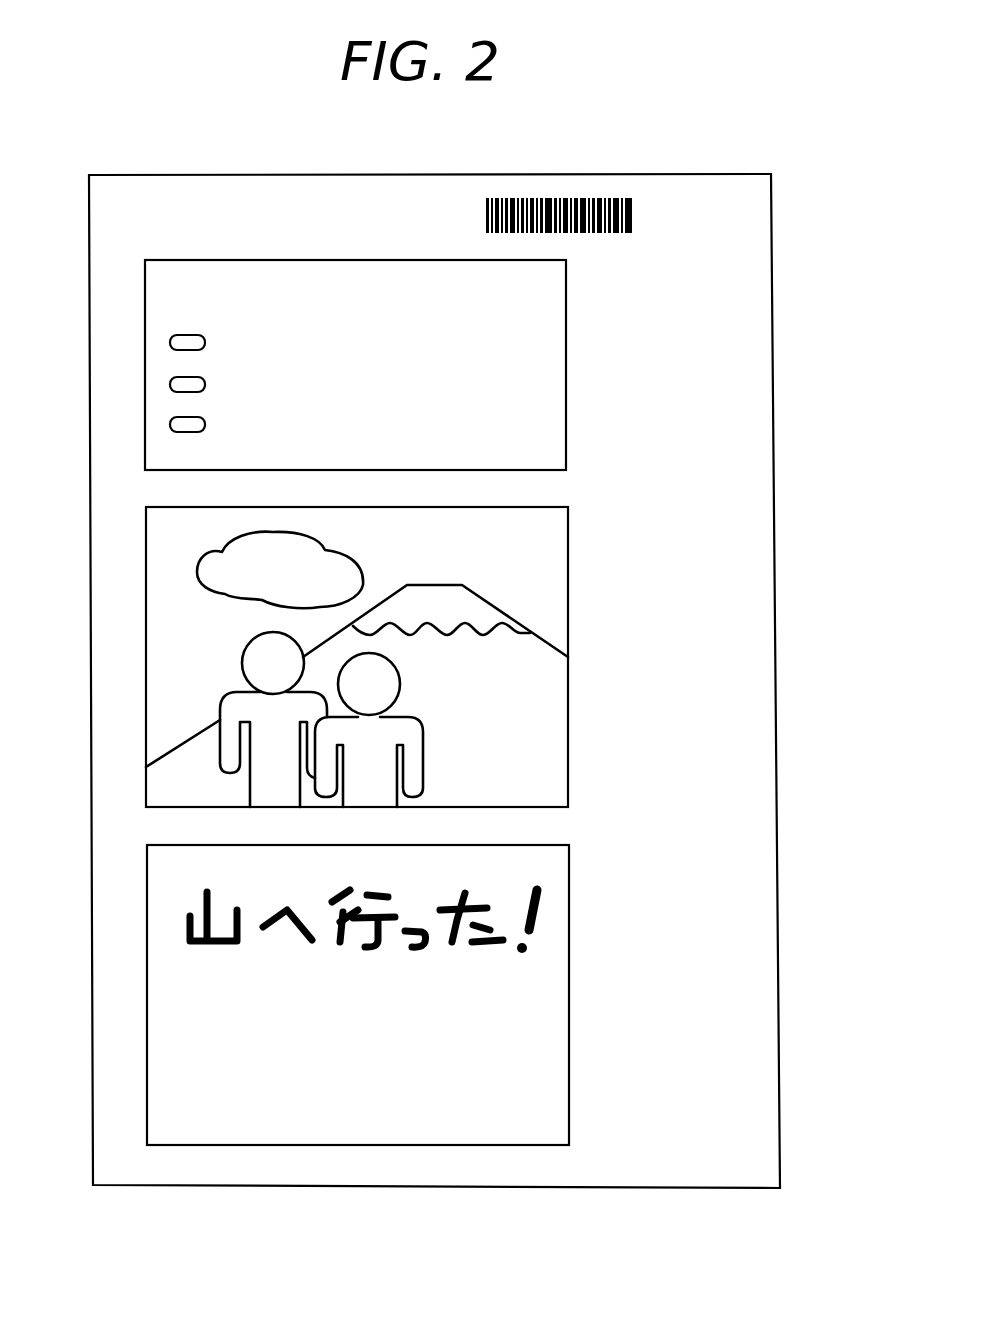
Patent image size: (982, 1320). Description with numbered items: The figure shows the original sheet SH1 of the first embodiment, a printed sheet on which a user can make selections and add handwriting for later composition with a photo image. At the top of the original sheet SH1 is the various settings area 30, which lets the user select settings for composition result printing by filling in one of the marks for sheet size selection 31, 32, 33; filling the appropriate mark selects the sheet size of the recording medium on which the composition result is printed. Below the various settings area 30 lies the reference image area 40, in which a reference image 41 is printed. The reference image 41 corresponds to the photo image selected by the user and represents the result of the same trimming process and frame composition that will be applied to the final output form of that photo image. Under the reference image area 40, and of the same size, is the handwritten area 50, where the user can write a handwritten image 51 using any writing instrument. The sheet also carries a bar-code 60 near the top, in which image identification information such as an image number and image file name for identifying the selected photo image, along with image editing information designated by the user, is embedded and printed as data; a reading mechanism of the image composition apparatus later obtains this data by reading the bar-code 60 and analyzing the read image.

The original sheet SH1 is at (130, 175).
The barcode 60 is at (632, 211).
The various settings area 30 is at (438, 365).
The mark for sheet size selection 31 is at (170, 342).
The mark for sheet size selection 32 is at (170, 383).
The mark for sheet size selection 33 is at (170, 424).
The reference image area 40 is at (494, 657).
The reference image 41 is at (500, 608).
The handwritten area 50 is at (496, 995).
The handwritten image 51 is at (542, 930).